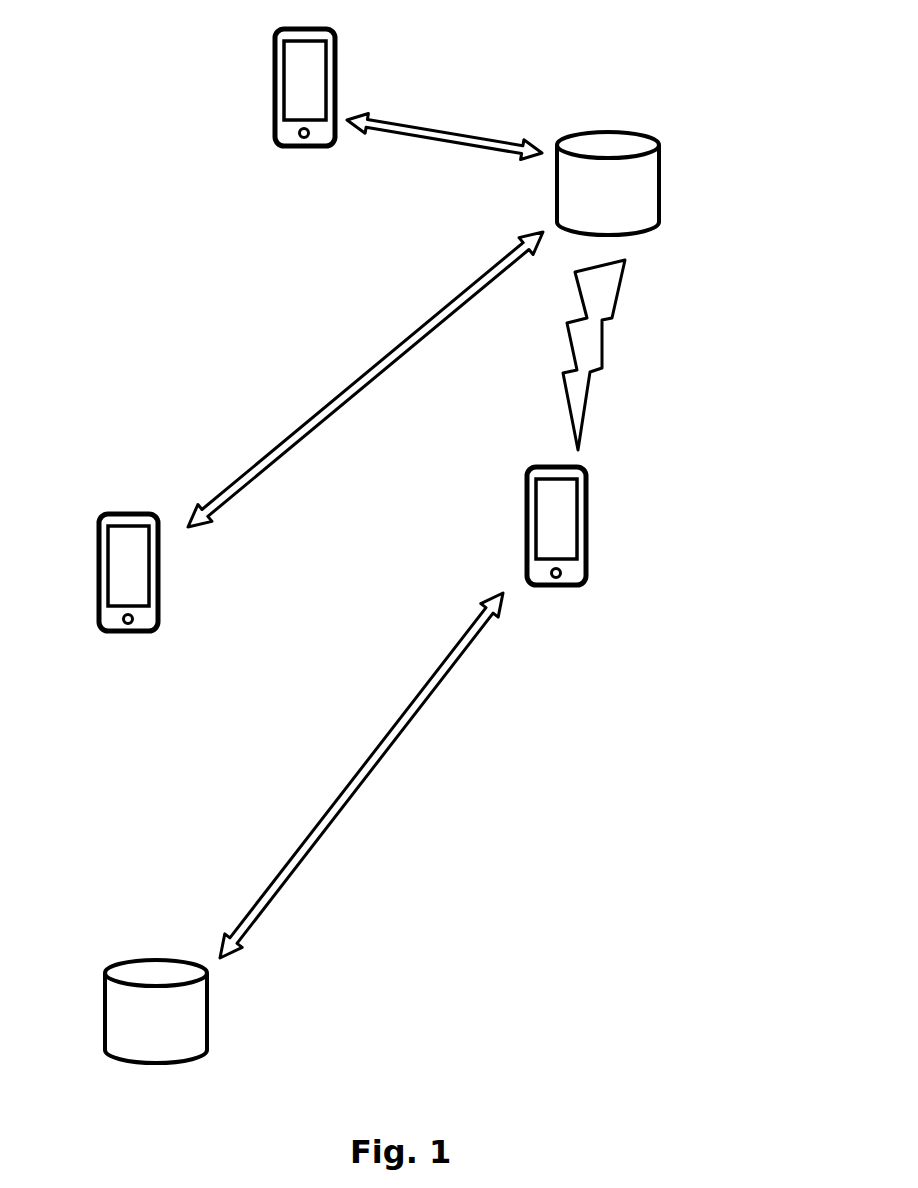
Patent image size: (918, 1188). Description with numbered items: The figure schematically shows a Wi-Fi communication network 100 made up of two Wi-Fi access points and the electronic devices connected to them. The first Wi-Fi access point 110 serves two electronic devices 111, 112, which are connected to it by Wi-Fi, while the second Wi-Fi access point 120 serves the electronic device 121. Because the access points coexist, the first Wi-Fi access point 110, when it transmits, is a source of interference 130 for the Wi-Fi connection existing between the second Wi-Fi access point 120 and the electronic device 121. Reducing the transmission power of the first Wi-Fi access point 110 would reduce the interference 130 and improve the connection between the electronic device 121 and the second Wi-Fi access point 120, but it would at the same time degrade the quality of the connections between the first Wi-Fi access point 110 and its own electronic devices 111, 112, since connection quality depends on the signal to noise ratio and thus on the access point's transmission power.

The Wi-Fi communication network 100 is at (88, 115).
The Wi-Fi access point AP1 110 is at (663, 182).
The electronic device 111 is at (160, 573).
The electronic device 112 is at (338, 88).
The Wi-Fi access point AP2 120 is at (208, 1010).
The electronic device 121 is at (588, 527).
The interference 130 is at (595, 290).